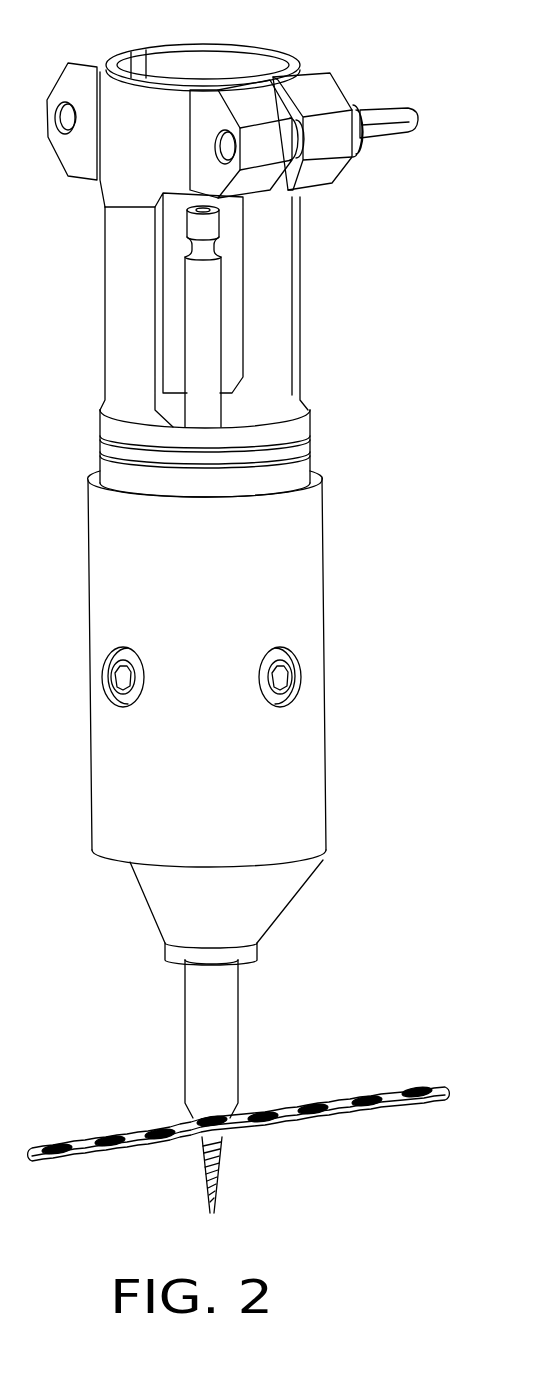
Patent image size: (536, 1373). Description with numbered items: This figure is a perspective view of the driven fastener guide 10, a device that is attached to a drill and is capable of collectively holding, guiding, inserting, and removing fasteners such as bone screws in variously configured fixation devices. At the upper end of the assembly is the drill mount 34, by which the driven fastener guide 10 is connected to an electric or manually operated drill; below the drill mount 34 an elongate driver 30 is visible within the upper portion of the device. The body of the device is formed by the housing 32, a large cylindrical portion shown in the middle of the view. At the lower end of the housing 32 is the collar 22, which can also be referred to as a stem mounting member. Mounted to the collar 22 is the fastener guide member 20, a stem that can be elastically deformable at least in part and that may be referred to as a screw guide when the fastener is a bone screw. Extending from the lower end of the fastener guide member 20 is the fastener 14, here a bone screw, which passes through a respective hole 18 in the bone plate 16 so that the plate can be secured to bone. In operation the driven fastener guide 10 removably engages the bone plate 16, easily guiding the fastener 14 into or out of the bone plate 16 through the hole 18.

The driven fastener guide 10 is at (367, 545).
The fastener 14 is at (202, 1177).
The bone plate 16 is at (313, 1125).
The hole 18 is at (115, 1137).
The fastener guide member 20 is at (237, 1040).
The collar 22 is at (268, 897).
The elongate driver 30 is at (195, 320).
The housing 32 is at (317, 765).
The drill mount 34 is at (298, 307).